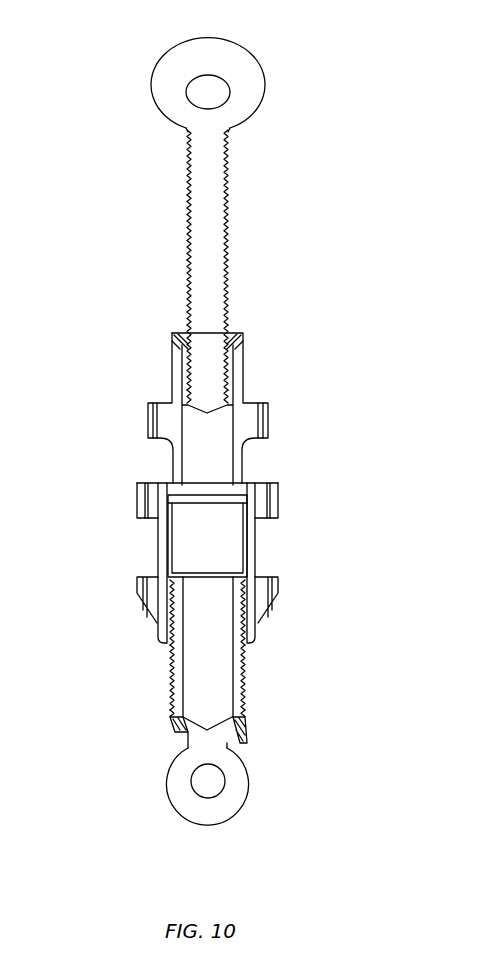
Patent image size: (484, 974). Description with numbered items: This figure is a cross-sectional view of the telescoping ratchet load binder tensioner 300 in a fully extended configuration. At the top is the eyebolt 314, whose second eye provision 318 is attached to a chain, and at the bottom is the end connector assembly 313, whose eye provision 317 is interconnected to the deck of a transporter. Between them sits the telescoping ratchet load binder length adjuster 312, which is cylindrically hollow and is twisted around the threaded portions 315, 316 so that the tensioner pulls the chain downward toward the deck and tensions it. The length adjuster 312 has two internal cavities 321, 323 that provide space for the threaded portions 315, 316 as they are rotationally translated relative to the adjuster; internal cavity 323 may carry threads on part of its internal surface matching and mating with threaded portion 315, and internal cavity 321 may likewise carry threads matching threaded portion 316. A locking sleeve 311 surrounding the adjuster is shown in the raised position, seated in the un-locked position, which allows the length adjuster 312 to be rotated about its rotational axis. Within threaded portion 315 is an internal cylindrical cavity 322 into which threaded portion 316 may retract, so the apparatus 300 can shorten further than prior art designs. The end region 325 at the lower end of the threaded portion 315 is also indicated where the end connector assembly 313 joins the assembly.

The telescoping ratchet load binder tensioner 300 is at (141, 190).
The eyebolt 314 is at (188, 66).
The second eye provision 318 is at (212, 87).
The threaded portion 316 is at (232, 212).
The telescoping ratchet load binder length adjuster 312 is at (173, 456).
The internal cavity 321 is at (215, 455).
The locking sleeve 311 is at (148, 545).
The internal cavity 323 is at (218, 523).
The threaded portion 315 is at (172, 698).
The internal cylindrical cavity 322 is at (215, 682).
The sleeve end 325 is at (248, 737).
The end connector assembly 313 is at (240, 765).
The eye provision 317 is at (210, 782).